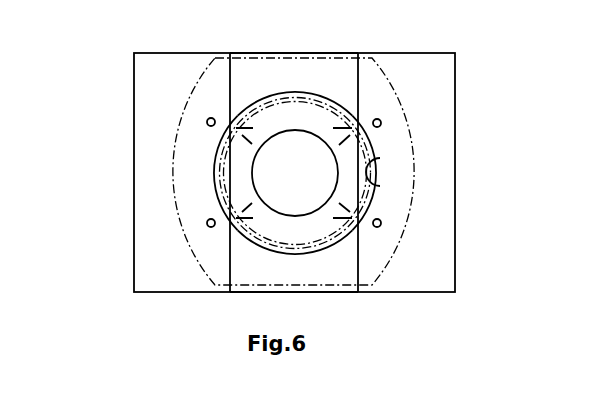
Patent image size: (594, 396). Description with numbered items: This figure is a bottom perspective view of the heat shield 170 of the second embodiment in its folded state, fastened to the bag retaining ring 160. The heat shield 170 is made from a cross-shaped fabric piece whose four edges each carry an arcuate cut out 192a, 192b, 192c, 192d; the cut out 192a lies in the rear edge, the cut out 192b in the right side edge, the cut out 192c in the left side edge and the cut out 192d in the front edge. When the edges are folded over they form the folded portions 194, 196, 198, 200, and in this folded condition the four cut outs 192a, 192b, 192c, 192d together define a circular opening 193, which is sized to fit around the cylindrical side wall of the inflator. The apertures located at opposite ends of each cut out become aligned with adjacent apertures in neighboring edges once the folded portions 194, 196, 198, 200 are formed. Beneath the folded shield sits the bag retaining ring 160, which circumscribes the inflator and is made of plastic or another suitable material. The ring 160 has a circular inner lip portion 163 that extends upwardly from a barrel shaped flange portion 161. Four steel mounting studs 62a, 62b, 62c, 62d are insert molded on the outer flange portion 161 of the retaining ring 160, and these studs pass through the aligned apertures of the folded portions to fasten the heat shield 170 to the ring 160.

The heat shield 170 is at (452, 53).
The folded portion 200 is at (155, 168).
The folded portion 198 is at (438, 227).
The folded portion 196 is at (350, 57).
The folded portion 194 is at (348, 283).
The bag retaining ring 160 is at (413, 188).
The barrel shaped flange portion 161 is at (207, 148).
The circular inner lip portion 163 is at (207, 152).
The arcuate cut out 192a is at (283, 92).
The arcuate cut out 192b is at (375, 142).
The arcuate cut out 192c is at (207, 190).
The arcuate cut out 192d is at (283, 253).
The circular opening 193 is at (375, 155).
The mounting stud 62a is at (208, 119).
The mounting stud 62b is at (381, 120).
The mounting stud 62c is at (209, 227).
The mounting stud 62d is at (381, 226).